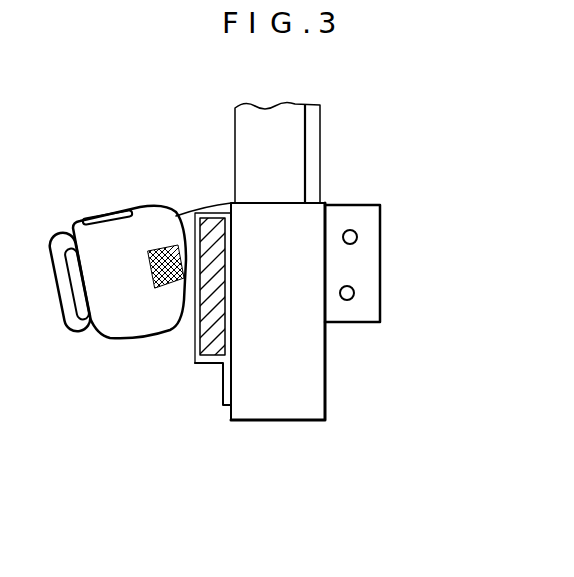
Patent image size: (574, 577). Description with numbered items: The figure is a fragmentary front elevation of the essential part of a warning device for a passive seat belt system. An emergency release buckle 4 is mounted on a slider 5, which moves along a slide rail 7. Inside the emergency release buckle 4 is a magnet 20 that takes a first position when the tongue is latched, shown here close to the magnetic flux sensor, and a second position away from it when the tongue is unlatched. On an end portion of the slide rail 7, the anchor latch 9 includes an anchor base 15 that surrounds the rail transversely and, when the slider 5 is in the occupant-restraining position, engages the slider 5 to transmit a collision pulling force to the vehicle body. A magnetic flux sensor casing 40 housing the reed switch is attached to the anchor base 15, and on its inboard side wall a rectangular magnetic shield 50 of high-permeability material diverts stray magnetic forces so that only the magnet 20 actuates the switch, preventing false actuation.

The emergency release buckle 4 is at (107, 243).
The slider 5 is at (184, 227).
The slide rail 7 is at (290, 168).
The anchor latch 9 is at (390, 263).
The anchor base 15 is at (258, 370).
The magnet 20 is at (147, 272).
The magnetic flux sensor casing 40 is at (195, 317).
The magnetic shield 50 is at (205, 343).